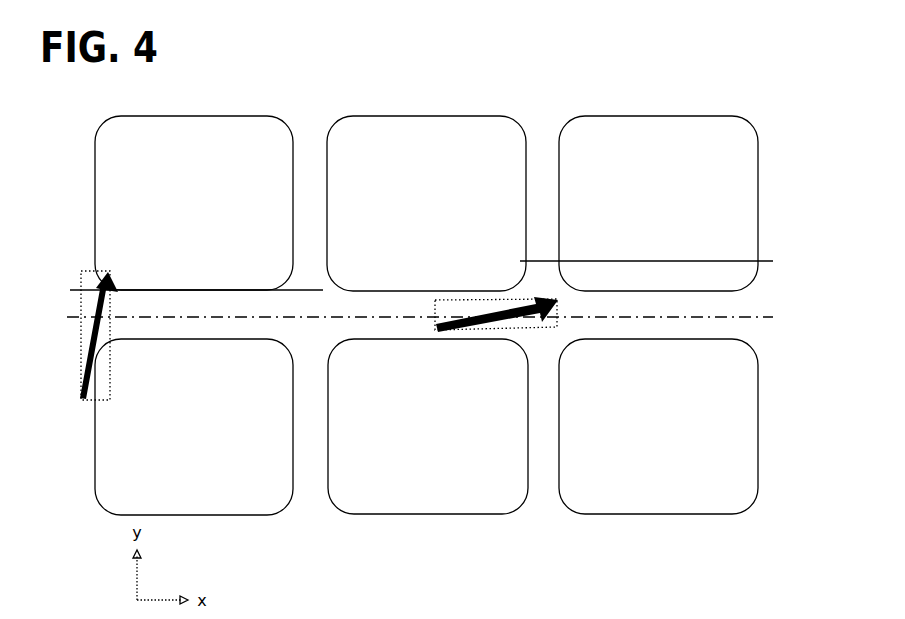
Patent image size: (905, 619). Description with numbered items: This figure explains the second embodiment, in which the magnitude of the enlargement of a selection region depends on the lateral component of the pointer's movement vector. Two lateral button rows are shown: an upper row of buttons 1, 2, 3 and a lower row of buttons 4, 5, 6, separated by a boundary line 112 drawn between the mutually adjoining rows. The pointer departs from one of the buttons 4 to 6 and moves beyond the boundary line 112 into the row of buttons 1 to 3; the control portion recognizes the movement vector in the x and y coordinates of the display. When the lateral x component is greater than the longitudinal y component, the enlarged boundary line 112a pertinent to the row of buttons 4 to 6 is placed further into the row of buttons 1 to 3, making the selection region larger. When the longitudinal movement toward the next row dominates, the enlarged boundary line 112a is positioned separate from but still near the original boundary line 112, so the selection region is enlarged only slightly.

The button 1 is at (197, 116).
The button 2 is at (430, 116).
The button 3 is at (660, 116).
The button 4 is at (253, 515).
The button 5 is at (482, 514).
The button 6 is at (720, 514).
The boundary line 112 is at (738, 310).
The enlarged boundary line 112a is at (72, 290).